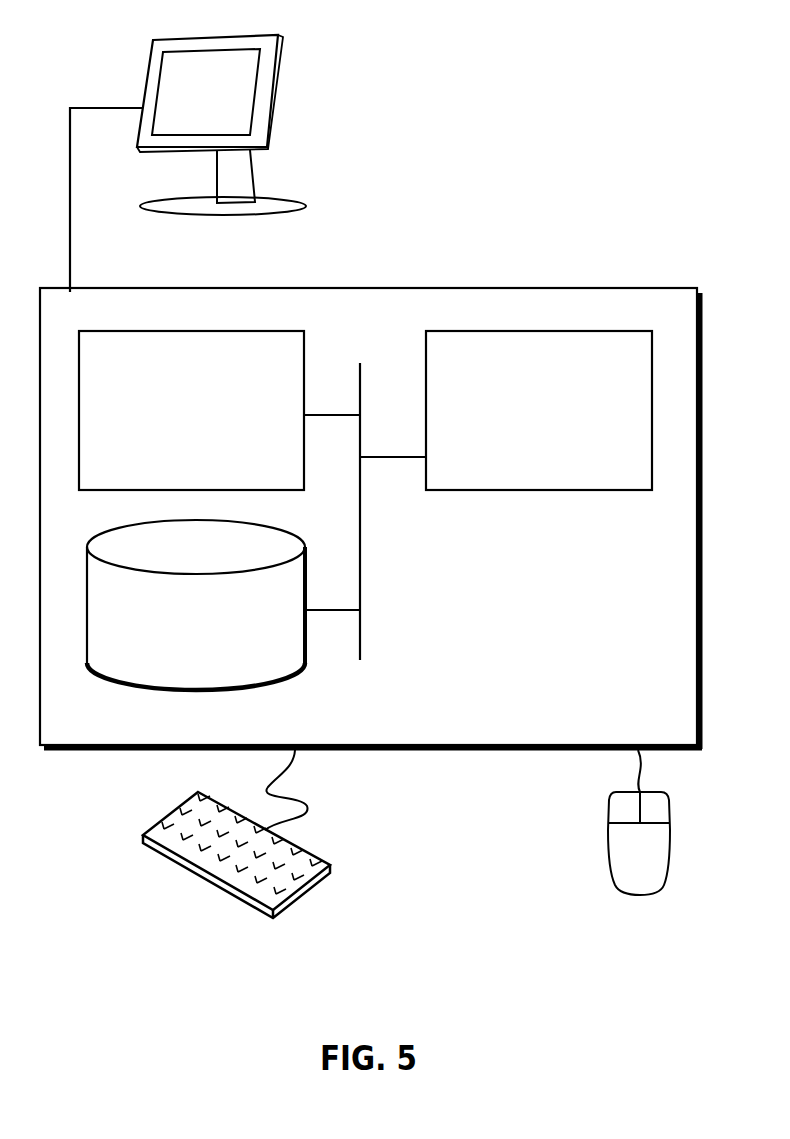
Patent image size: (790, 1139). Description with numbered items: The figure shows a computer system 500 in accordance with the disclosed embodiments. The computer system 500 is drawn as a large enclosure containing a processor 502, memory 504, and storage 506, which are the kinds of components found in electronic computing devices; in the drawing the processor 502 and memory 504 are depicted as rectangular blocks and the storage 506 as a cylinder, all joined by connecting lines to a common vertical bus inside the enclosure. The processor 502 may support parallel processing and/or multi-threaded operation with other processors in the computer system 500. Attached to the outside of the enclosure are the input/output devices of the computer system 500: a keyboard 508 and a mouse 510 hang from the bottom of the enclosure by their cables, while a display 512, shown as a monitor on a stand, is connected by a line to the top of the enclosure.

The computer system 500 is at (415, 268).
The processor 502 is at (563, 422).
The memory 504 is at (214, 422).
The storage 506 is at (219, 633).
The keyboard 508 is at (162, 852).
The mouse 510 is at (660, 863).
The display 512 is at (188, 163).